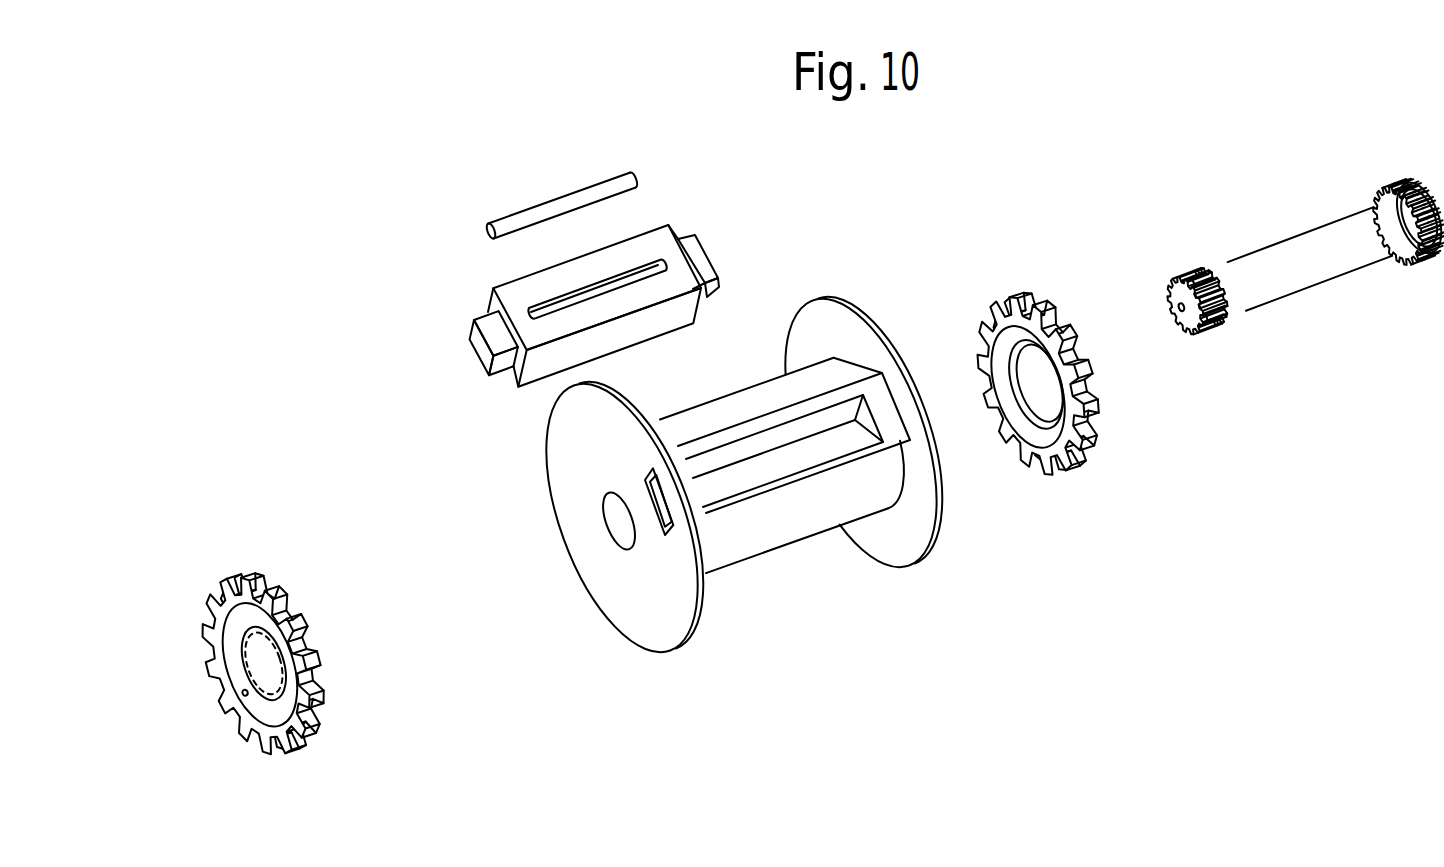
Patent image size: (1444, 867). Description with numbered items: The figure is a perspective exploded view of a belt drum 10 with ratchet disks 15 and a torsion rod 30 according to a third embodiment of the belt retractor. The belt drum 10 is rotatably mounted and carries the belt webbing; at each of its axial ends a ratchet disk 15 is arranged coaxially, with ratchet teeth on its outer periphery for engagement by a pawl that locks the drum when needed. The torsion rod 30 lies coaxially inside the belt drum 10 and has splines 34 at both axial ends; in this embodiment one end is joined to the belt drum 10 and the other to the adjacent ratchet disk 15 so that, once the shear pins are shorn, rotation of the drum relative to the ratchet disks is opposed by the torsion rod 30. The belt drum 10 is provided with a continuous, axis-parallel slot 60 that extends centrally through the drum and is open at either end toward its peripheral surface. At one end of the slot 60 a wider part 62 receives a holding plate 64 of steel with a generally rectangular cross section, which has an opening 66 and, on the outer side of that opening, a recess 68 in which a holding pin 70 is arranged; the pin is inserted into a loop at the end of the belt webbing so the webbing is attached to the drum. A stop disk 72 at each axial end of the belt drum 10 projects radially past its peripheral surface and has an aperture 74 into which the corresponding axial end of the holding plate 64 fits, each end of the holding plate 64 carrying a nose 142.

The belt drum 10 is at (744, 487).
The ratchet disk 15 is at (318, 737).
The torsion rod 30 is at (1302, 250).
The splines 34 is at (1387, 194).
The slot 60 is at (765, 470).
The wider part 62 is at (842, 396).
The holding plate 64 is at (585, 300).
The opening 66 is at (617, 285).
The recess 68 is at (578, 287).
The holding pin 70 is at (552, 205).
The stop disk 72 is at (660, 623).
The aperture 74 is at (653, 518).
The nose 142 is at (480, 350).